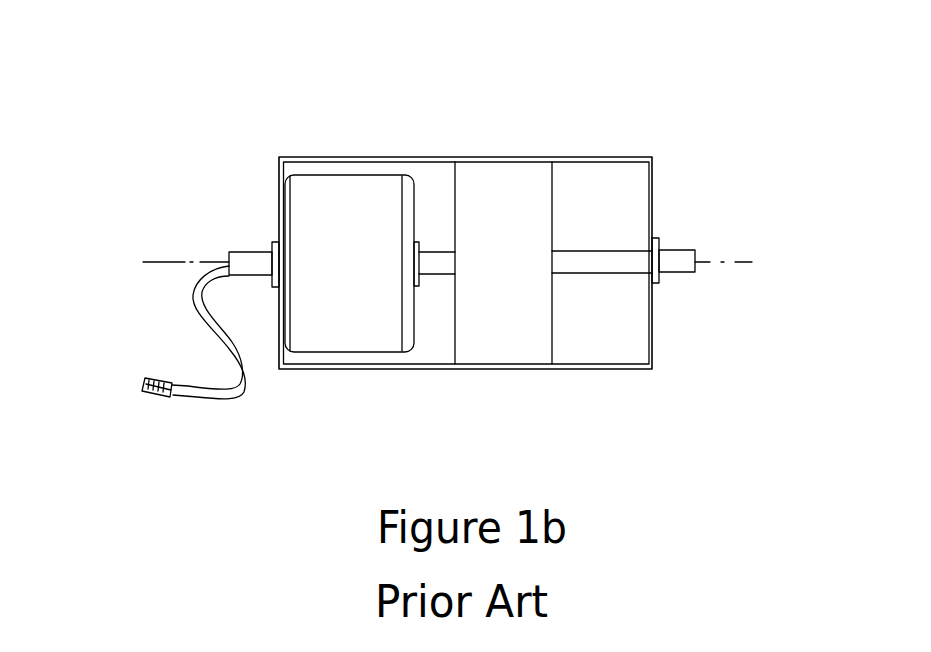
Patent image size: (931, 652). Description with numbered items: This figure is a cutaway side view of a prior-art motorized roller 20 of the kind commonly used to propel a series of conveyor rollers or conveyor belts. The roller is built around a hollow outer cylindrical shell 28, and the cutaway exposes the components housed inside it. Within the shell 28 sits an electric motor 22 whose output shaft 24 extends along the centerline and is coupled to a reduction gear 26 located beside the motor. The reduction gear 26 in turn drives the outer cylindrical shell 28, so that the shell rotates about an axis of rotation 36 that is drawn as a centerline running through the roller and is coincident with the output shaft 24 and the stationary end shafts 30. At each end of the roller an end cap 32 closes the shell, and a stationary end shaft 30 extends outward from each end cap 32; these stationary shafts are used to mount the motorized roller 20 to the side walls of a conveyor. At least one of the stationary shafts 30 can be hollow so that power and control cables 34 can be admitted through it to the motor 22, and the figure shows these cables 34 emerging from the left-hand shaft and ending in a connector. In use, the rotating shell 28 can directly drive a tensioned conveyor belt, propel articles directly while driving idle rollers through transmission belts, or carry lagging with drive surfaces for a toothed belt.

The motorized roller 20 is at (327, 86).
The electric motor 22 is at (327, 344).
The output shaft 24 is at (432, 270).
The reduction gear 26 is at (527, 352).
The outer cylindrical shell 28 is at (580, 157).
The stationary end shaft 30 is at (259, 258).
The end cap 32 is at (653, 211).
The power and control cables 34 is at (223, 397).
The axis of rotation 36 is at (735, 261).